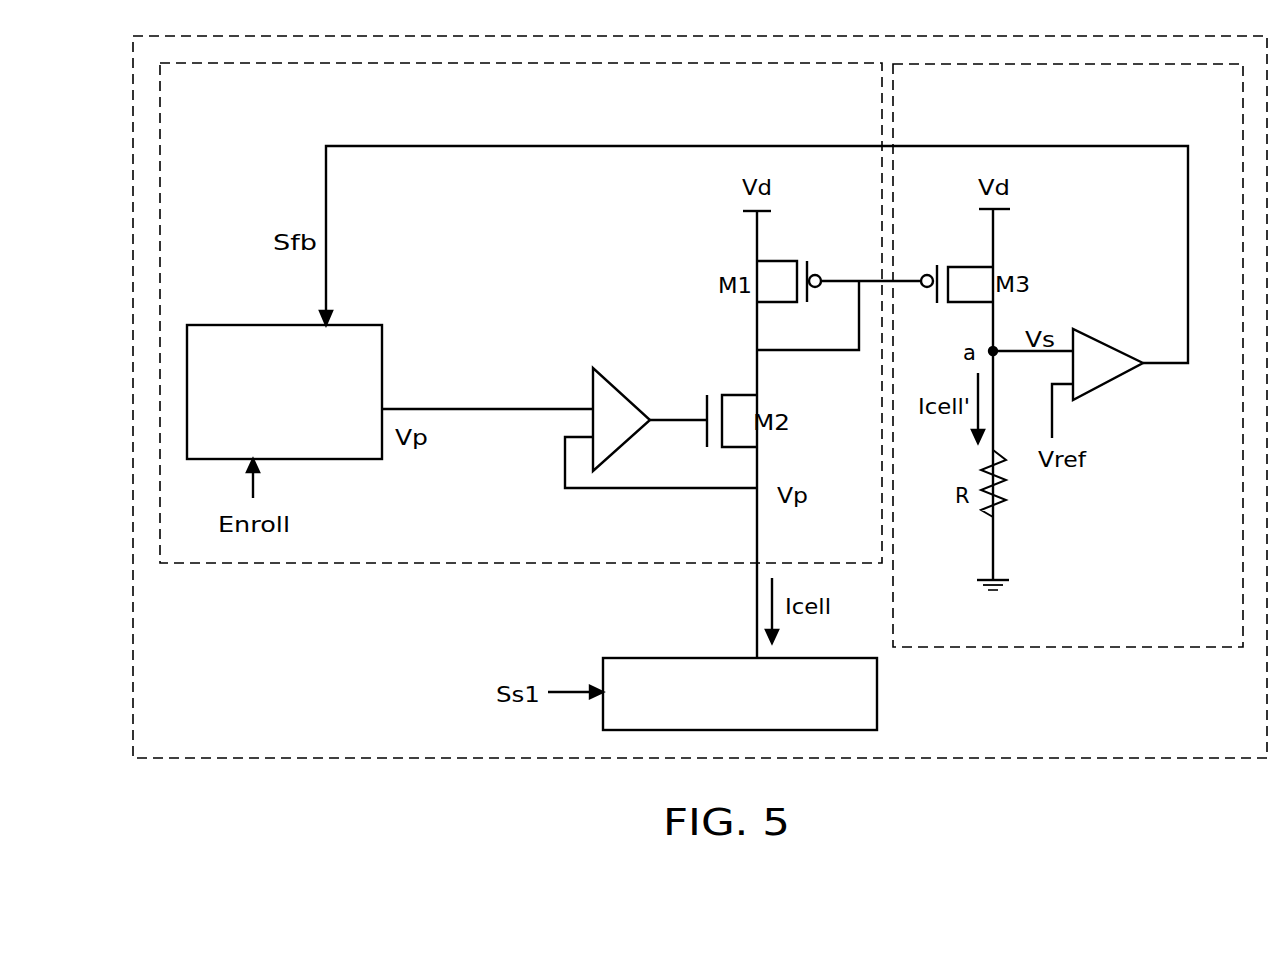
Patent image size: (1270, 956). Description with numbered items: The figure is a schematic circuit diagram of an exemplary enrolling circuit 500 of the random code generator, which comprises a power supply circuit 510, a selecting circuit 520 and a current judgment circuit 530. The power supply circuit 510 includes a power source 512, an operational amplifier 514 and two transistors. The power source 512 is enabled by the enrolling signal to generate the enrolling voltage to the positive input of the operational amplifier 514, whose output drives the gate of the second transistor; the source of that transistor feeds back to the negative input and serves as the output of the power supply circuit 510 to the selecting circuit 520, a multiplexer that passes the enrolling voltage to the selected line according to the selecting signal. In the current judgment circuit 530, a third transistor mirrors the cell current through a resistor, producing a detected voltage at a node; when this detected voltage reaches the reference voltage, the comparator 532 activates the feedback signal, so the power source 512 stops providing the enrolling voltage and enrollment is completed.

The enrolling circuit 500 is at (1208, 746).
The power supply circuit 510 is at (490, 105).
The power source 512 is at (357, 399).
The operational amplifier 514 is at (607, 377).
The selecting circuit 520 is at (862, 708).
The current judgment circuit 530 is at (1223, 639).
The comparator 532 is at (1128, 333).